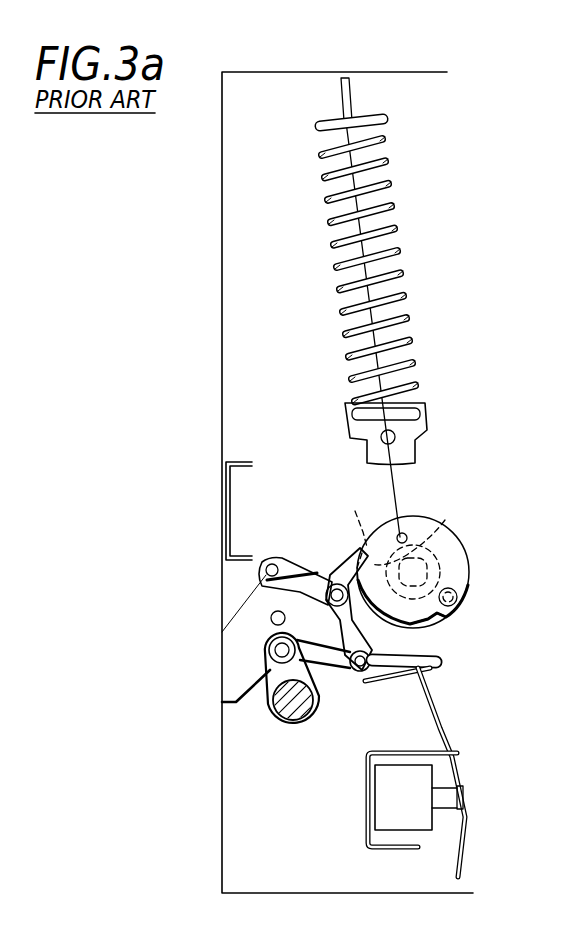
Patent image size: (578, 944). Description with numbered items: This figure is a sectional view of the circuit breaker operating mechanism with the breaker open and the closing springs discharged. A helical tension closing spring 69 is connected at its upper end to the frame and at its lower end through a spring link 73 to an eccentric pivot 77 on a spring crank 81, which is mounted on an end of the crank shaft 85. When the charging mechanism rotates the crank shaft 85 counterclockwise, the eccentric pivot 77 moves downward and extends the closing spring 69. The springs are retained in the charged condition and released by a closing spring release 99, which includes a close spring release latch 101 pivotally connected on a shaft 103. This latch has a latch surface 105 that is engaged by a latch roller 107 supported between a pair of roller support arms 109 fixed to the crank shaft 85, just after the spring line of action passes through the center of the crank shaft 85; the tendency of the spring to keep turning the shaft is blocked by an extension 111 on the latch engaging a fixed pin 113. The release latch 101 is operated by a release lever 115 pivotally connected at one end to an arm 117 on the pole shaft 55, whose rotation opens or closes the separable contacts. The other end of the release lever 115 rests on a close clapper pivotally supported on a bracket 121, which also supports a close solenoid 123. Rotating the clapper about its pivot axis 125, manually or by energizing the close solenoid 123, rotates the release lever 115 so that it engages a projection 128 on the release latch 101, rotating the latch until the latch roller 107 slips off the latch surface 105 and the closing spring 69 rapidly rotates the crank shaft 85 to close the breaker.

The pole shaft 55 is at (284, 712).
The closing spring 69 is at (404, 291).
The spring link 73 is at (375, 452).
The eccentric pivot 77 is at (398, 332).
The spring crank 81 is at (467, 551).
The crank shaft 85 is at (446, 530).
The closing spring release 99 is at (238, 624).
The close spring release latch 101 is at (347, 562).
The shaft 103 is at (305, 572).
The latch surface 105 is at (346, 532).
The latch roller 107 is at (460, 581).
The roller support arms 109 is at (432, 621).
The extension 111 is at (265, 593).
The fixed pin 113 is at (265, 566).
The release lever 115 is at (447, 656).
The arm 117 is at (272, 672).
The bracket 121 is at (388, 850).
The close solenoid 123 is at (384, 804).
The pivot axis 125 is at (444, 749).
The projection 128 is at (336, 656).